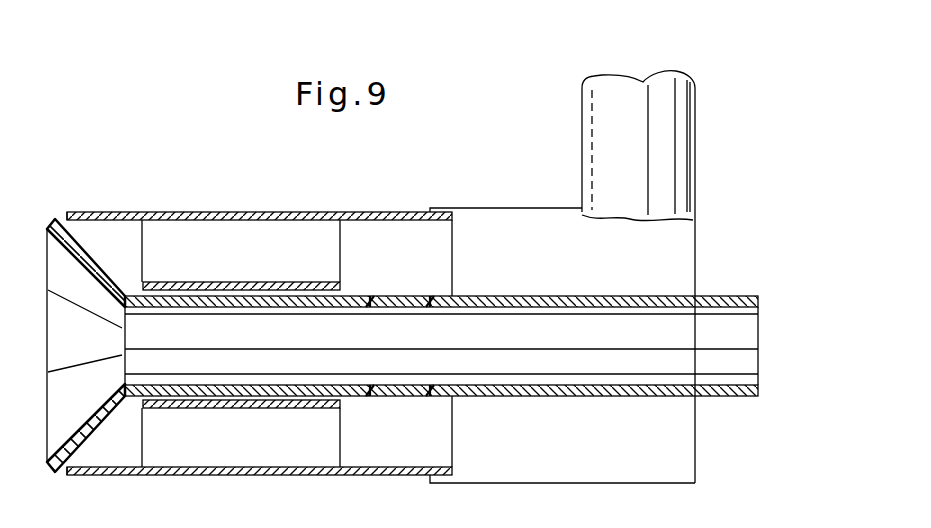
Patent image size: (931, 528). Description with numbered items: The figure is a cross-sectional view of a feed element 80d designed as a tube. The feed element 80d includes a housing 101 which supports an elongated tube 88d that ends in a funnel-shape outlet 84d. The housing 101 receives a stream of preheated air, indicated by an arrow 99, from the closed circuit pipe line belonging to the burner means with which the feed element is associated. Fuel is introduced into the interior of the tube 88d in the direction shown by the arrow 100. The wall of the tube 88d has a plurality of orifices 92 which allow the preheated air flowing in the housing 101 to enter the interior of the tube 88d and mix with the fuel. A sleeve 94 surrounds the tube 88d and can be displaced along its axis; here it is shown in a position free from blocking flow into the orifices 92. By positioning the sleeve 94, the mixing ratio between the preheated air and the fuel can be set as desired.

The feed element 80d is at (708, 290).
The funnel-shape outlet 84d is at (112, 350).
The elongated tube 88d is at (580, 396).
The orifices 92 is at (430, 297).
The sleeve 94 is at (247, 282).
The arrow indicating preheated air stream 99 is at (637, 25).
The arrow indicating fuel introduction 100 is at (813, 345).
The housing 101 is at (557, 227).